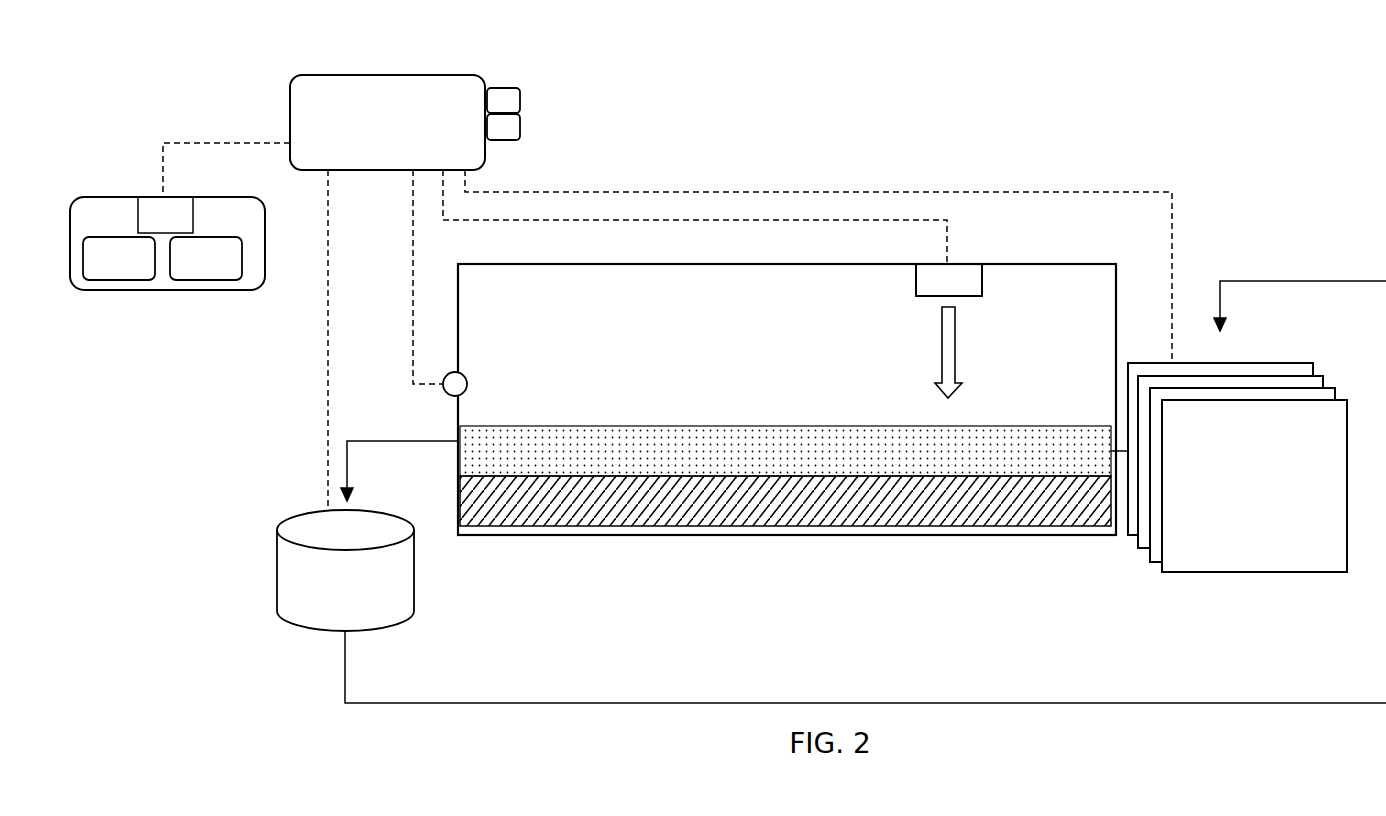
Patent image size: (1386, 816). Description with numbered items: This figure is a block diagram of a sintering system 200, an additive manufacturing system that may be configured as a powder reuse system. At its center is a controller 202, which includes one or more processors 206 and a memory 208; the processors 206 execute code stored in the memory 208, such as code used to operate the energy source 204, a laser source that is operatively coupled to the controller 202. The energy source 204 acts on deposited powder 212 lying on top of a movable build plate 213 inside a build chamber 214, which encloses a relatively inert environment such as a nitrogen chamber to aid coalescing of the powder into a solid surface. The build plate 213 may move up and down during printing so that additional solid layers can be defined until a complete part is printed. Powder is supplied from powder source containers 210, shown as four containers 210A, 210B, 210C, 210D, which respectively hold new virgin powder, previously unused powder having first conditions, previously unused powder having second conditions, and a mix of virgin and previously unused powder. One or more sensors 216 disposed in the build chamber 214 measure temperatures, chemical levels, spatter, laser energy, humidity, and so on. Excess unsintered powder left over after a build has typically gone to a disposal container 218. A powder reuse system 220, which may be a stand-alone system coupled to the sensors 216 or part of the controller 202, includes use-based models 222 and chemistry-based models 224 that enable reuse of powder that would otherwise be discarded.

The sintering system 200 is at (1278, 86).
The controller 202 is at (350, 75).
The energy source 204 is at (968, 264).
The processor 206 is at (520, 100).
The memory 208 is at (520, 127).
The powder source container 210 is at (1254, 597).
The powder source container 210A is at (1127, 537).
The powder source container 210B is at (1135, 550).
The powder source container 210C is at (1150, 562).
The powder source container 210D is at (1210, 572).
The deposited powder 212 is at (696, 450).
The movable build plate 213 is at (791, 512).
The build chamber 214 is at (1093, 264).
The sensor 216 is at (445, 394).
The disposal container 218 is at (345, 570).
The powder reuse system 220 is at (120, 195).
The use-based model 222 is at (120, 280).
The chemistry-based model 224 is at (205, 280).